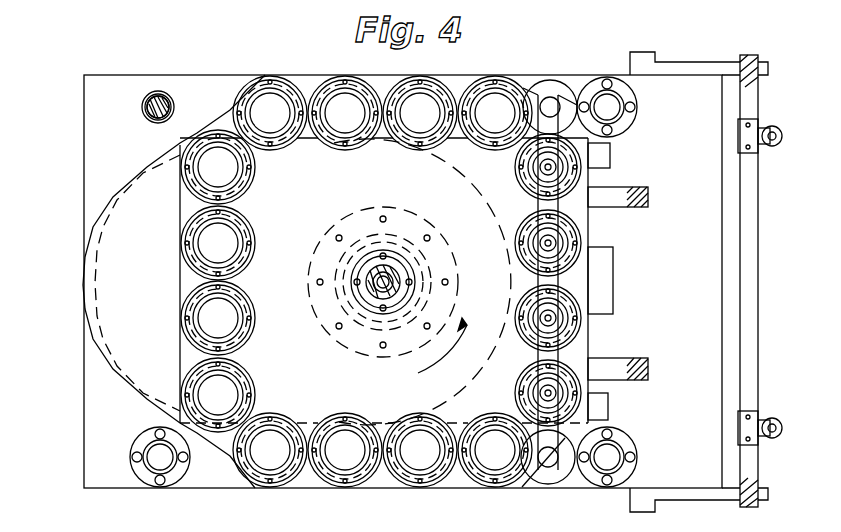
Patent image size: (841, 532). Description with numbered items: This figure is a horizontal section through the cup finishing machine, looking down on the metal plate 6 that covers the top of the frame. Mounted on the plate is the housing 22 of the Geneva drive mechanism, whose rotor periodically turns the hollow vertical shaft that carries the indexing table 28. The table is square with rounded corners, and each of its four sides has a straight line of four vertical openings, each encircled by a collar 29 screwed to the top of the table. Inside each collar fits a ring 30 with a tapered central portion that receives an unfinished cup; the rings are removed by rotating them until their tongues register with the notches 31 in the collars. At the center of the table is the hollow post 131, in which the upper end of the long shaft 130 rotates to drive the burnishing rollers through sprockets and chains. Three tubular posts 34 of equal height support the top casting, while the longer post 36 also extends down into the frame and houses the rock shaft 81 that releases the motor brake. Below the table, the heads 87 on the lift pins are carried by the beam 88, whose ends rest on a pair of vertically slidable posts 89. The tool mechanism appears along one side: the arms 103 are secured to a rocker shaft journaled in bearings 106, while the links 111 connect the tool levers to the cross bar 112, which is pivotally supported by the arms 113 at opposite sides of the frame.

The metal plate 6 is at (100, 123).
The housing 22 is at (110, 280).
The indexing table 28 is at (395, 477).
The collars 29 is at (327, 477).
The rings 30 is at (465, 477).
The notches 31 is at (257, 473).
The posts 34 is at (592, 90).
The post 36 is at (147, 91).
The rock shaft 81 is at (162, 96).
The head 87 is at (557, 327).
The beam 88 is at (552, 473).
The posts 89 is at (565, 92).
The arms 103 is at (648, 202).
The bearings 106 is at (522, 88).
The links 111 is at (778, 129).
The cross bar 112 is at (750, 174).
The arms 113 is at (670, 67).
The long shaft 130 is at (382, 266).
The hollow post 131 is at (367, 270).